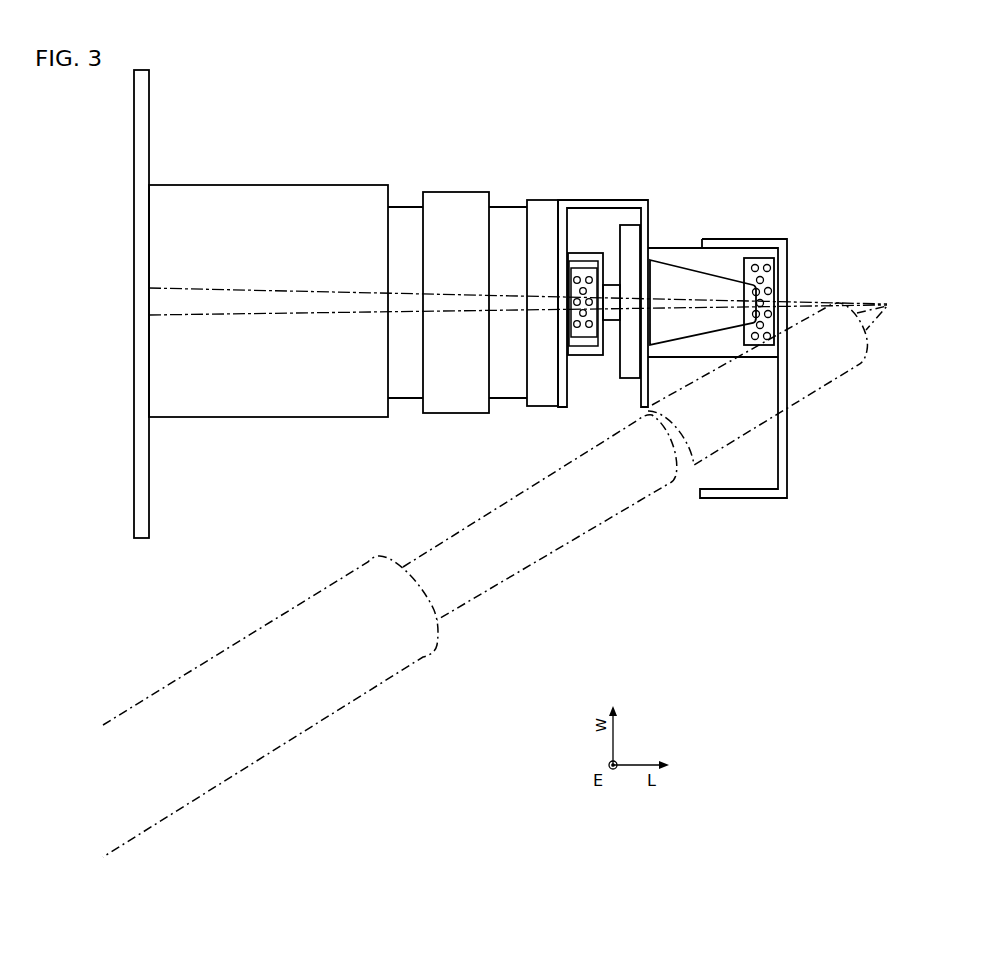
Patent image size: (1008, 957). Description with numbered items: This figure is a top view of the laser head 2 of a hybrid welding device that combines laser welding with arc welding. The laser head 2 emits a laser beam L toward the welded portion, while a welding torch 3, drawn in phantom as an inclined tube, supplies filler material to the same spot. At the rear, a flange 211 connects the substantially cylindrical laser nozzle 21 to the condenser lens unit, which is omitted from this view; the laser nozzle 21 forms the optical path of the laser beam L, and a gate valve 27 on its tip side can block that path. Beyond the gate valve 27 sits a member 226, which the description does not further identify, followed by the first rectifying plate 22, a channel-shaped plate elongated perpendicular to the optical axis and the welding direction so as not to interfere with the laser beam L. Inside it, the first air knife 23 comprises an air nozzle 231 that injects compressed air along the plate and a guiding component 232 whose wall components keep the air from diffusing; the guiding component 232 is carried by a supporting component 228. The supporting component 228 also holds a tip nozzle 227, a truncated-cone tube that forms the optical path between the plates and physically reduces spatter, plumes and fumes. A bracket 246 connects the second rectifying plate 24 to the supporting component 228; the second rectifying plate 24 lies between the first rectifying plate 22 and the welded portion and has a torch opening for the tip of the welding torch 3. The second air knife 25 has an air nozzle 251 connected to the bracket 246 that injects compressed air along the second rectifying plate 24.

The laser head 2 is at (683, 166).
The flange 211 is at (150, 104).
The laser nozzle 21 is at (297, 185).
The gate valve 27 is at (458, 192).
The front plate of holder 226 is at (544, 200).
The first rectifying plate 22 is at (578, 200).
The first air knife 23 is at (594, 283).
The air nozzle 231 is at (578, 267).
The guiding component 232 is at (587, 356).
The supporting component 228 is at (627, 381).
The tip nozzle 227 is at (673, 272).
The second air knife 25 is at (749, 275).
The air nozzle 251 is at (762, 257).
The bracket 246 is at (665, 357).
The second rectifying plate 24 is at (789, 447).
The welding torch 3 is at (547, 553).
The laser beam L is at (225, 318).